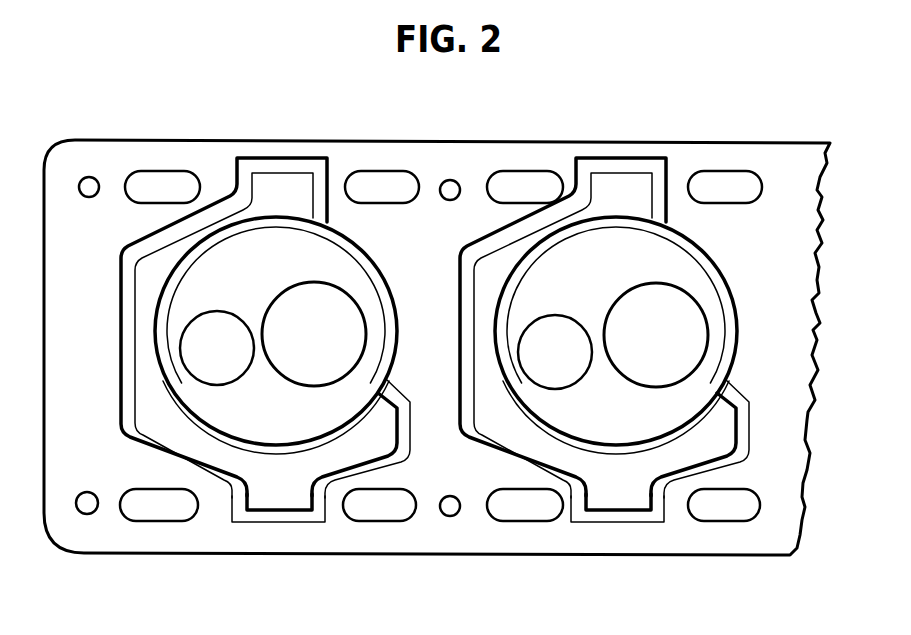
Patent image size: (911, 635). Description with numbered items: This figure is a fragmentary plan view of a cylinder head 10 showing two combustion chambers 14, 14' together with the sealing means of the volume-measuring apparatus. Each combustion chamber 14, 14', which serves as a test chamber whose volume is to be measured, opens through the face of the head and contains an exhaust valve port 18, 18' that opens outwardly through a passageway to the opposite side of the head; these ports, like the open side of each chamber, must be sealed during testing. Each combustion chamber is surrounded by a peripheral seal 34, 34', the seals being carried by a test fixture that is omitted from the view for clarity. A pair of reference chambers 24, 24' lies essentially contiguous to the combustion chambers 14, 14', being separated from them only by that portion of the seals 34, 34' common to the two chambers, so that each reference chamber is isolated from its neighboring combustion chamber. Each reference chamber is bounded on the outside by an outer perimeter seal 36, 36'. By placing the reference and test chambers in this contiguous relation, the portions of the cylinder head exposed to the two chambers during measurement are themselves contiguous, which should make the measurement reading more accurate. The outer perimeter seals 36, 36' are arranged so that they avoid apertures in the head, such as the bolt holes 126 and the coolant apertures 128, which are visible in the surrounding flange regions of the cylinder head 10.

The cylinder head 10 is at (565, 542).
The combustion chamber 14 is at (299, 322).
The combustion chamber 14' is at (639, 327).
The exhaust valve port 18 is at (217, 348).
The exhaust valve port 18' is at (555, 352).
The reference chamber 24 is at (236, 328).
The reference chamber 24' is at (593, 328).
The peripheral seal 34 is at (284, 335).
The peripheral seal 34' is at (638, 335).
The outer perimeter seal 36 is at (266, 552).
The outer perimeter seal 36' is at (635, 556).
The bolt holes 126 is at (82, 186).
The coolant apertures 128 is at (163, 171).